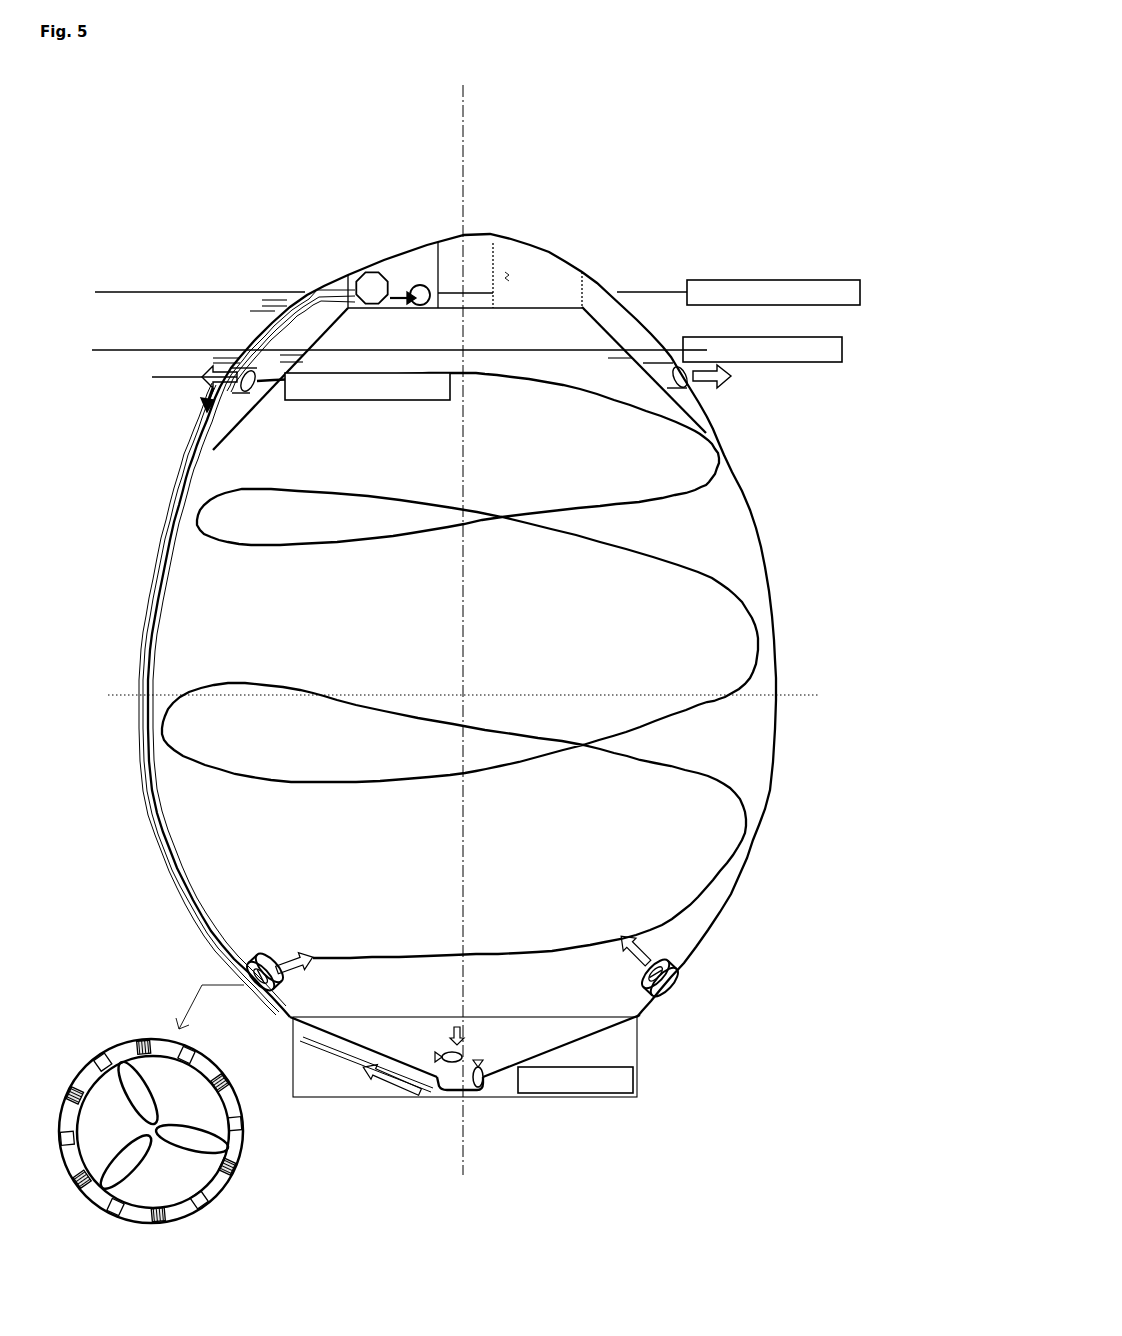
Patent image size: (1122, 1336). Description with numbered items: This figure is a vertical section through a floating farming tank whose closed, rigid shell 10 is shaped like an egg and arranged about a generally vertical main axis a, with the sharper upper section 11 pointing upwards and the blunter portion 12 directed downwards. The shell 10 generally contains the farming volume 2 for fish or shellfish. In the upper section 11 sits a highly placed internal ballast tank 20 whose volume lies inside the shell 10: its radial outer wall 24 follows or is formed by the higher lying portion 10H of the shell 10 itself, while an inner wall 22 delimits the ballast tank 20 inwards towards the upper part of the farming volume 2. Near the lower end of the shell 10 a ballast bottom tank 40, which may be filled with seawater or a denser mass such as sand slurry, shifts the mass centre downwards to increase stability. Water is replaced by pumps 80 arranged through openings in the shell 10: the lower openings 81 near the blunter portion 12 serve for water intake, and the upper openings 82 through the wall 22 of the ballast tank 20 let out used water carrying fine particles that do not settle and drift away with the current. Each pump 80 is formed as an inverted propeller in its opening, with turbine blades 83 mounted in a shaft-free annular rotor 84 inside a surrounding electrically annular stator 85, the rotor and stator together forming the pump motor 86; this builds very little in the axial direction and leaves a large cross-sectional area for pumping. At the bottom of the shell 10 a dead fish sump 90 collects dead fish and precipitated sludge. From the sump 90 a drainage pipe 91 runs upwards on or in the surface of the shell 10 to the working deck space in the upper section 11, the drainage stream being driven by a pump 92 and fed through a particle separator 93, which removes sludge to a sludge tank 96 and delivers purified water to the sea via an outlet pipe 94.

The main axis a is at (647, 604).
The farming volume 2 is at (585, 662).
The shell 10 is at (524, 614).
The higher lying portion of the shell 10H is at (676, 241).
The upper section 11 is at (325, 171).
The blunter portion 12 is at (710, 1045).
The ballast tank 20 is at (459, 387).
The wall 22 is at (235, 423).
The outer wall 24 is at (896, 216).
The ballast bottom tank 40 is at (846, 1158).
The pump 80 is at (496, 807).
The lower opening 81 is at (267, 947).
The opening 82 is at (820, 429).
The turbine blades 83 is at (242, 1213).
The annular rotor 84 is at (153, 1132).
The annular stator 85 is at (162, 1126).
The pump motor 86 is at (150, 1130).
The dead fish sump 90 is at (443, 1077).
The drainage pipe 91 is at (150, 800).
The pump 92 is at (414, 283).
The particle separator 93 is at (357, 272).
The outlet pipe 94 is at (304, 286).
The sludge tank 96 is at (420, 345).